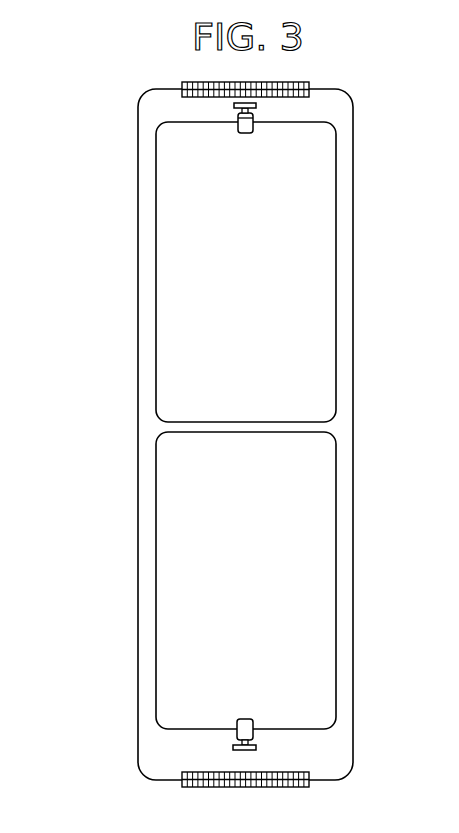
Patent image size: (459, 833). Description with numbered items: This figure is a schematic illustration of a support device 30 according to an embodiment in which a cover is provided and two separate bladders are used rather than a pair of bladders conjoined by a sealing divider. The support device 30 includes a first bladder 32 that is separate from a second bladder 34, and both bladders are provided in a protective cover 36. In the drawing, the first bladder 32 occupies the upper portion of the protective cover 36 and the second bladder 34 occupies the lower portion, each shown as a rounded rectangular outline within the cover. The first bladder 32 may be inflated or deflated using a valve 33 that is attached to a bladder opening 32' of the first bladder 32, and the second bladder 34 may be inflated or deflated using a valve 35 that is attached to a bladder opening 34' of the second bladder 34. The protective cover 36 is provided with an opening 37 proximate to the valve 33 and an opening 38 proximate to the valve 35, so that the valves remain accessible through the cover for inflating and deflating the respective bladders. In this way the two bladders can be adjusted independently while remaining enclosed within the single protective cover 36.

The support device 30 is at (205, 412).
The first bladder 32 is at (246, 272).
The bladder opening 32' is at (158, 139).
The valve 33 is at (158, 139).
The second bladder 34 is at (246, 580).
The bladder opening 34' is at (322, 734).
The valve 35 is at (288, 769).
The protective cover 36 is at (136, 291).
The opening 37 is at (303, 77).
The opening 38 is at (263, 788).